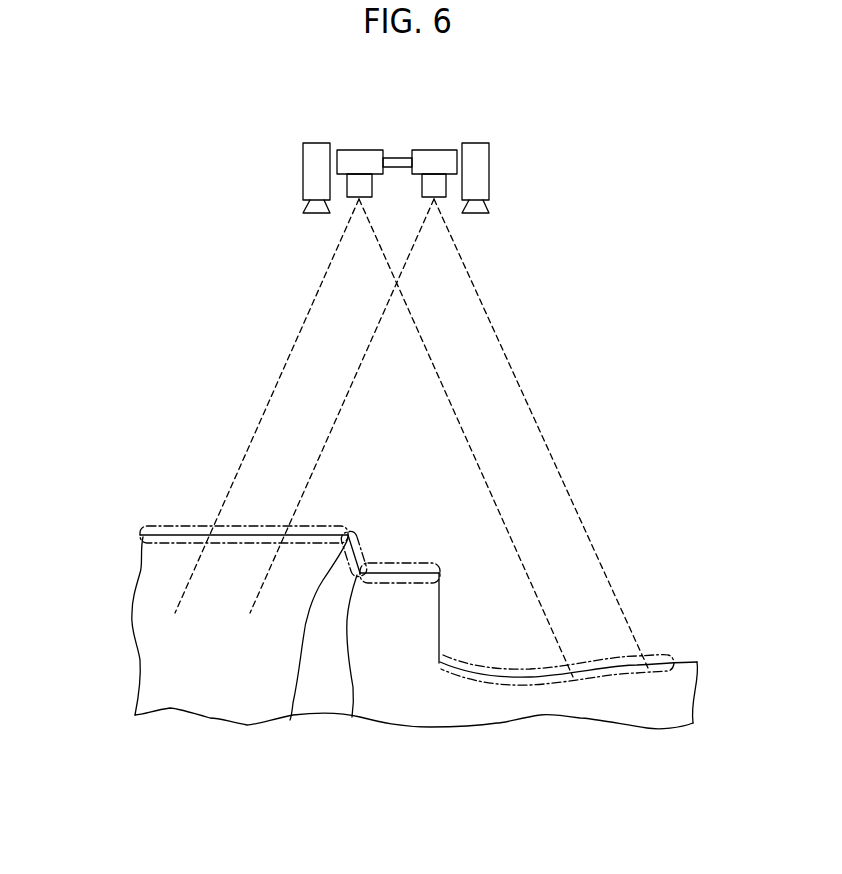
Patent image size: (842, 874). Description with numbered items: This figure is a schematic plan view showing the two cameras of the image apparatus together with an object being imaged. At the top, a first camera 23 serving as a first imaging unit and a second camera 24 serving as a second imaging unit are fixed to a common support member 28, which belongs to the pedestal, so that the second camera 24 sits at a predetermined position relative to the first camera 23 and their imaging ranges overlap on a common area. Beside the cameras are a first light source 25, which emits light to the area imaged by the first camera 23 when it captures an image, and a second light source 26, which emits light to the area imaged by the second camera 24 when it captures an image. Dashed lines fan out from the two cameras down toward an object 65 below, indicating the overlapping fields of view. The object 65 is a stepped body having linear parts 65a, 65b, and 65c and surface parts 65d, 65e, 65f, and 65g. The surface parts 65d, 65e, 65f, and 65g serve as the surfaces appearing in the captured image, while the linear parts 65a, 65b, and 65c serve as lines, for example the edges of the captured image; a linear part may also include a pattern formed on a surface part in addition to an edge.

The first camera 23 is at (356, 150).
The second camera 24 is at (440, 150).
The first light source 25 is at (303, 168).
The second light source 26 is at (489, 165).
The support member 28 is at (396, 158).
The object 65 is at (153, 693).
The linear part 65a is at (348, 535).
The linear part 65b is at (352, 717).
The linear part 65c is at (440, 573).
The surface part 65d is at (175, 527).
The surface part 65e is at (290, 720).
The surface part 65f is at (400, 562).
The surface part 65g is at (660, 652).